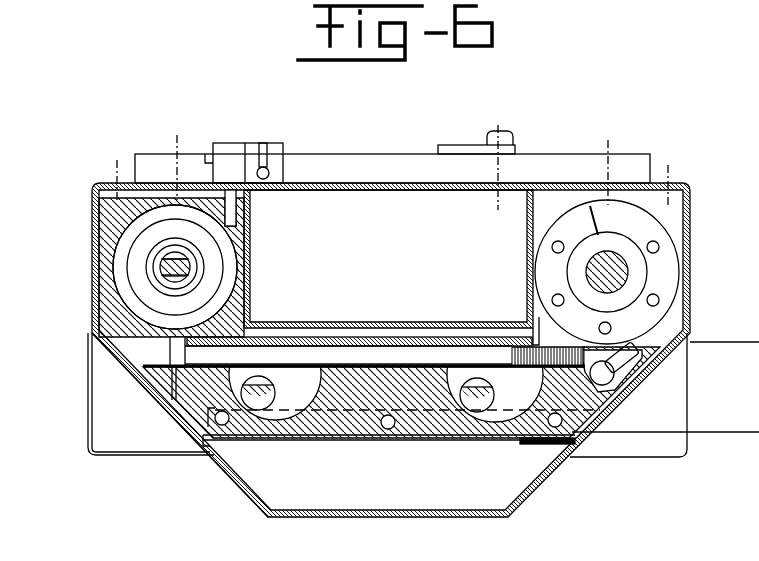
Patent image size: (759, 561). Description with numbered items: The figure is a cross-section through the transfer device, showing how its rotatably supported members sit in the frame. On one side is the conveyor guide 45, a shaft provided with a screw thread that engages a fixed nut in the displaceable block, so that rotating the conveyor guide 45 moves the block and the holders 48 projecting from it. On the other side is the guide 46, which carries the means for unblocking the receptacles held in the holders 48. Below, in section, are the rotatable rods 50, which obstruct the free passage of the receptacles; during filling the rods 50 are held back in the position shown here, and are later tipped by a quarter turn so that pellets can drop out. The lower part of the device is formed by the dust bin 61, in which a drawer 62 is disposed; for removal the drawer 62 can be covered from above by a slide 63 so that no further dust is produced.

The conveyor guide 45 is at (618, 284).
The guide 46 is at (165, 277).
The holders 48 is at (443, 467).
The rotatable rod 50 is at (405, 406).
The dust bin 61 is at (691, 328).
The drawer 62 is at (244, 484).
The slide 63 is at (521, 444).